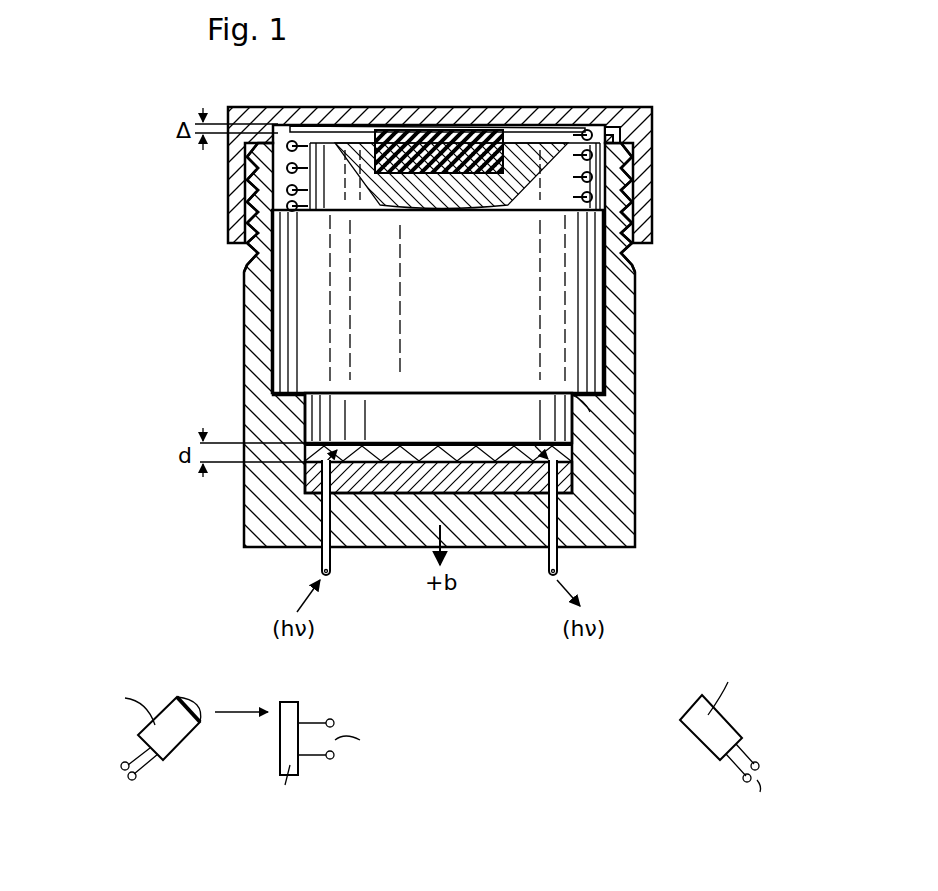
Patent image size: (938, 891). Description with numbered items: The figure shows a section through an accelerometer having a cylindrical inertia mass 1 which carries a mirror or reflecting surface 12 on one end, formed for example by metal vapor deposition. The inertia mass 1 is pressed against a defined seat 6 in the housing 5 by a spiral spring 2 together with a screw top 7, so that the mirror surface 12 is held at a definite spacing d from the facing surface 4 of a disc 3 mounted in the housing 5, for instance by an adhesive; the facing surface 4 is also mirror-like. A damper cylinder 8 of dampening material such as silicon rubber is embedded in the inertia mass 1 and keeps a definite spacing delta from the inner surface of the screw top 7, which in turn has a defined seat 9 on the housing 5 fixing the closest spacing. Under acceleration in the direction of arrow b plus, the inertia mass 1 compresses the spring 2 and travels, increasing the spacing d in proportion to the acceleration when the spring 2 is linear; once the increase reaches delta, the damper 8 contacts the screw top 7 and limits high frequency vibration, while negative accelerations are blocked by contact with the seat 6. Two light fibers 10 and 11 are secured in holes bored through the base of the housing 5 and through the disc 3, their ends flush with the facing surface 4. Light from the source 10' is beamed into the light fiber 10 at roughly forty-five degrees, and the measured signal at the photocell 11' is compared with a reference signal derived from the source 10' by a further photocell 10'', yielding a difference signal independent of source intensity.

The cylindrical inertia mass 1 is at (548, 338).
The spiral spring 2 is at (620, 186).
The disc 3 is at (512, 483).
The facing surface 4 is at (470, 458).
The housing 5 is at (620, 300).
The seat 6 is at (583, 415).
The screw top 7 is at (590, 118).
The damper cylinder 8 is at (485, 140).
The seat 9 is at (615, 138).
The light fiber 10 is at (284, 536).
The light fiber 11 is at (610, 538).
The mirror surface 12 is at (488, 440).
The light source 10' is at (150, 715).
The further photocell 10'' is at (404, 752).
The photocell 11' is at (731, 762).